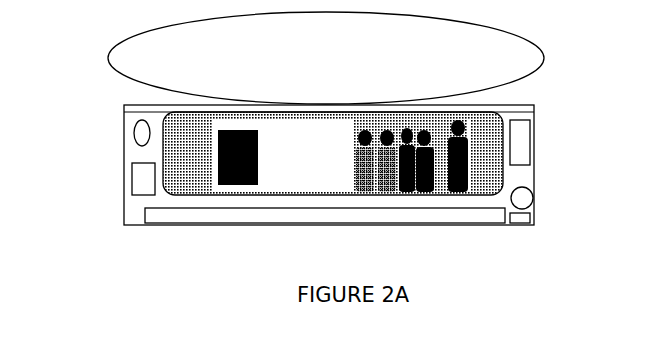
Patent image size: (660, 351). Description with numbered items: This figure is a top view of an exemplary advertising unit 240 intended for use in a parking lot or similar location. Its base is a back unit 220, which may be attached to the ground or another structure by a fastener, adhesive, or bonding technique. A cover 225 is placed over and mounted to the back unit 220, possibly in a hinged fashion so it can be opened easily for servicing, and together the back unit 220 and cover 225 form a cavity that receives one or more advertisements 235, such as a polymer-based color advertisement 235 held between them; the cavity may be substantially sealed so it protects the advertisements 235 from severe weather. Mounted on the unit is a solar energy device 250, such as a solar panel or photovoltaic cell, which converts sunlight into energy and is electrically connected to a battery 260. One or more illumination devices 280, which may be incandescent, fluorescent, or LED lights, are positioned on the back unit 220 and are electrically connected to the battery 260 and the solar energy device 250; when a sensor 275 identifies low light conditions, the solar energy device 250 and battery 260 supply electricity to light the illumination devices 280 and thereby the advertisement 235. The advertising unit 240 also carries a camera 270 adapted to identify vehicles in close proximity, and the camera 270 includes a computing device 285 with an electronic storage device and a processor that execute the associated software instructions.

The back unit 220 is at (127, 214).
The cover 225 is at (121, 76).
The advertisement 235 is at (163, 113).
The advertising unit 240 is at (113, 261).
The solar energy device 250 is at (134, 135).
The battery 260 is at (535, 142).
The camera 270 is at (130, 182).
The sensor 275 is at (535, 198).
The illumination device 280 is at (322, 226).
The computing device 285 is at (535, 224).